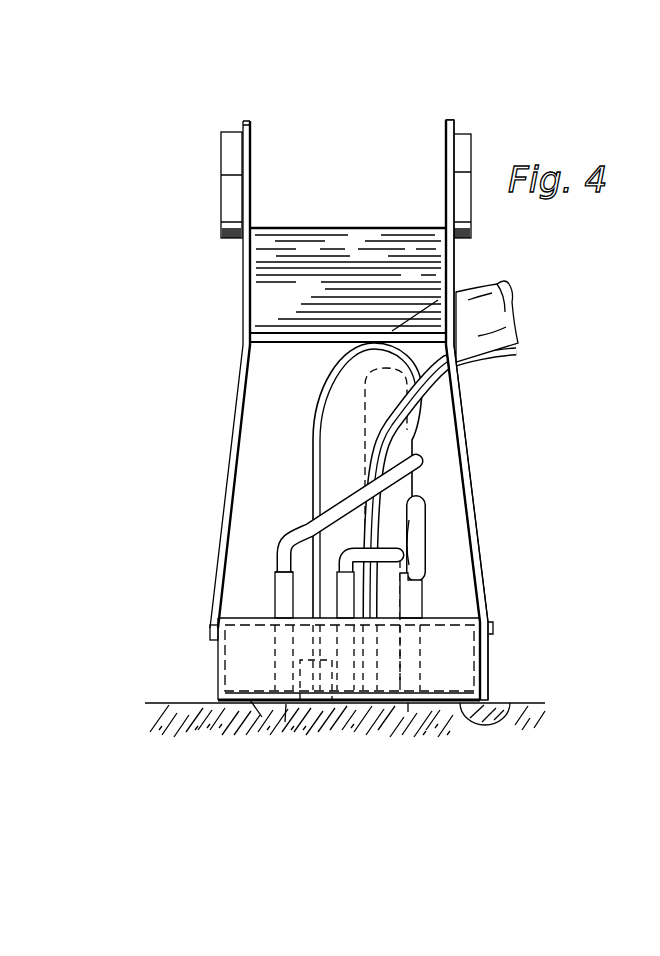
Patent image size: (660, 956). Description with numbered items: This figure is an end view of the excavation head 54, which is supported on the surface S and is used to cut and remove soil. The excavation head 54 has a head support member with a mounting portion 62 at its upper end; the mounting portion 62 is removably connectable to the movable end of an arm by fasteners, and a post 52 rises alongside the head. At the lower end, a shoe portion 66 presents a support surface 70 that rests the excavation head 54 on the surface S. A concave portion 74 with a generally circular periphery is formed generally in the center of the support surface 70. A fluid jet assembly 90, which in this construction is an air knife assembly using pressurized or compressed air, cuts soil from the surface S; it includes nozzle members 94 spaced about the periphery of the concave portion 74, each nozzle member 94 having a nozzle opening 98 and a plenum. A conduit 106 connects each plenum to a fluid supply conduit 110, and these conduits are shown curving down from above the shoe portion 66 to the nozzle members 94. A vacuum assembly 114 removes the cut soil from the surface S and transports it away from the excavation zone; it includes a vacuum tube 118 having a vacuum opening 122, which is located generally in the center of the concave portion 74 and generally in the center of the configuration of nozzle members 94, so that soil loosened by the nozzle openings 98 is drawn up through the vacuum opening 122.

The support post 52 is at (242, 351).
The excavation head 54 is at (545, 382).
The mounting portion 62 is at (481, 130).
The shoe portion 66 is at (481, 658).
The support surface 70 is at (506, 708).
The concave portion 74 is at (285, 722).
The fluid jet assembly 90 is at (262, 588).
The nozzle member 94 is at (415, 601).
The nozzle opening 98 is at (262, 717).
The conduit 106 is at (428, 504).
The fluid supply conduit 110 is at (424, 420).
The vacuum assembly 114 is at (313, 427).
The vacuum tube 118 is at (318, 453).
The vacuum opening 122 is at (315, 703).
The surface S is at (175, 704).